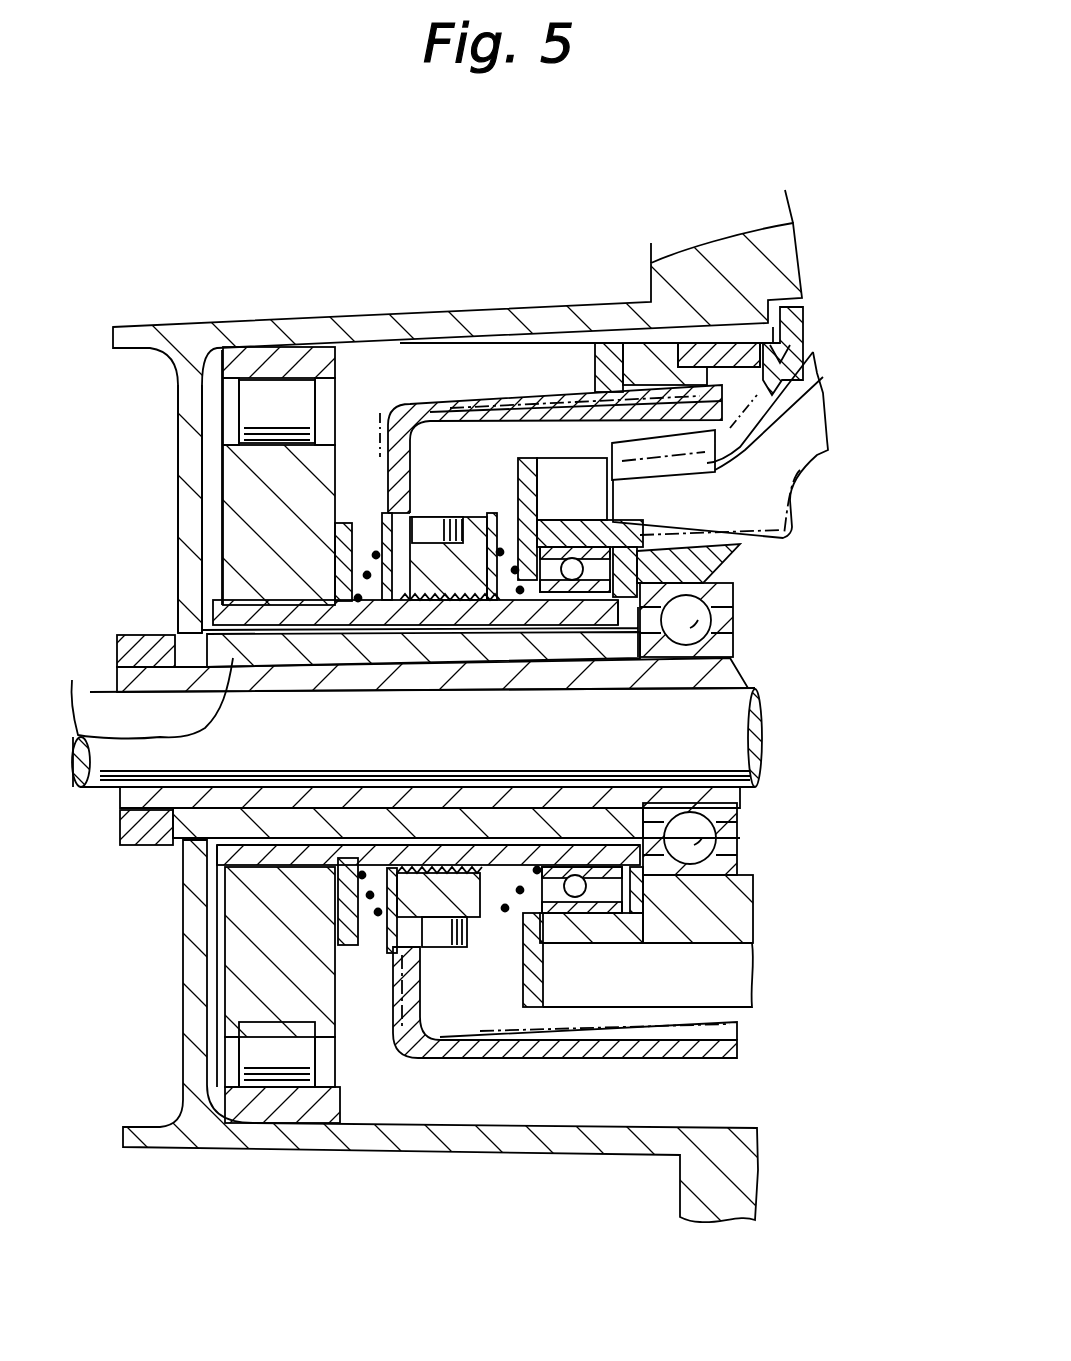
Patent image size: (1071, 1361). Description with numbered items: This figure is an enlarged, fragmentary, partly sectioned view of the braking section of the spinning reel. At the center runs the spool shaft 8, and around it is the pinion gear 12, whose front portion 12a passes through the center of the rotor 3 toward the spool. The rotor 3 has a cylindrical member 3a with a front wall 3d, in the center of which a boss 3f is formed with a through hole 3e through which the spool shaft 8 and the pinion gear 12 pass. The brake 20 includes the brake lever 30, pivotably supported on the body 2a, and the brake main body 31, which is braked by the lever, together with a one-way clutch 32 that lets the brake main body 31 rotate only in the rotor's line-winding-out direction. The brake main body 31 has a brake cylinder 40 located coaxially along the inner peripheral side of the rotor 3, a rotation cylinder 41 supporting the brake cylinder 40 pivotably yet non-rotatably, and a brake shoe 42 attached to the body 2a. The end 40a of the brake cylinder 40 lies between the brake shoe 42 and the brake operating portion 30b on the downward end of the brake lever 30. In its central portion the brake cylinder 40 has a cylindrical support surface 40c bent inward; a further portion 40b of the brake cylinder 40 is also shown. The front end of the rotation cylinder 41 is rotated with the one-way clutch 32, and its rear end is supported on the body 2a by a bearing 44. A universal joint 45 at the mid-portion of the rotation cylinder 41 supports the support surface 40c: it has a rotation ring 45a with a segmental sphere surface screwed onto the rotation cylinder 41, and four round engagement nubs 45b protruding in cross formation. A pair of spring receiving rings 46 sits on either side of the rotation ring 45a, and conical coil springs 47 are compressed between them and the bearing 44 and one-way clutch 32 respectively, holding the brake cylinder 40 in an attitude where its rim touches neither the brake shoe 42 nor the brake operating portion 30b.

The rotor 3 is at (445, 411).
The cylindrical member 3a is at (425, 328).
The front wall 3d is at (183, 443).
The through hole 3e is at (76, 735).
The boss 3f is at (200, 651).
The brake 20 is at (533, 342).
The brake shoe 42 is at (612, 346).
The brake operating portion 30b is at (816, 354).
The brake lever 30 is at (788, 454).
The brake main body 31 is at (394, 382).
The one-way clutch 32 is at (205, 492).
The brake cylinder 40 is at (533, 699).
The end of the brake cylinder 40a is at (500, 405).
The bracket vertical leg 40b is at (380, 445).
The support surface 40c is at (462, 947).
The universal joint 45 is at (442, 560).
The rotation ring 45a is at (500, 552).
The engagement nubs 45b is at (418, 517).
The rotation cylinder 41 is at (448, 580).
The conical coil springs 47 is at (364, 575).
The body 2a is at (730, 552).
The pinion gear 12 is at (720, 672).
The front portion of the pinion gear 12a is at (117, 665).
The spool shaft 8 is at (750, 750).
The spring receiving rings 46 is at (380, 953).
The bearing 44 is at (588, 930).